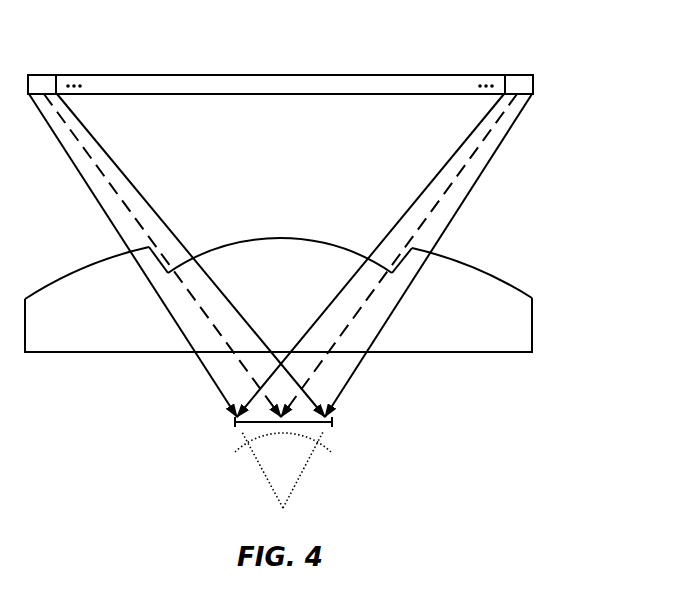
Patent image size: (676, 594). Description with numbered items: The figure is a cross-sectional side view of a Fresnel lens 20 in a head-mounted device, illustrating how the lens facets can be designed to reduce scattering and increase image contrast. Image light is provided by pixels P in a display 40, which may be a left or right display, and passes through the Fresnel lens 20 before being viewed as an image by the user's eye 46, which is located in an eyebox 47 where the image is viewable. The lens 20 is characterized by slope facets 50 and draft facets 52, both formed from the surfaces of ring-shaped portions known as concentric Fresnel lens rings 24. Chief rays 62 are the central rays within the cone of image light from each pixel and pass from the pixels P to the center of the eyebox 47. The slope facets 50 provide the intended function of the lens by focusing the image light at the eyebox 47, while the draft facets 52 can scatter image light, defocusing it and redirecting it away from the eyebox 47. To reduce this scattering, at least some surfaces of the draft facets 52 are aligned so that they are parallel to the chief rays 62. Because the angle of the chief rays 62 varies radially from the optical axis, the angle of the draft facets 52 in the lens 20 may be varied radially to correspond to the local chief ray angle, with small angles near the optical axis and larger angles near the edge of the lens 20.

The pixels P is at (42, 86).
The display 40 is at (577, 81).
The chief rays 62 is at (102, 178).
The Fresnel lens 20 is at (155, 338).
The slope facets 50 is at (50, 290).
The draft facets 52 is at (160, 263).
The concentric Fresnel lens rings 24 is at (158, 305).
The eyebox 47 is at (334, 423).
The eye 46 is at (289, 474).